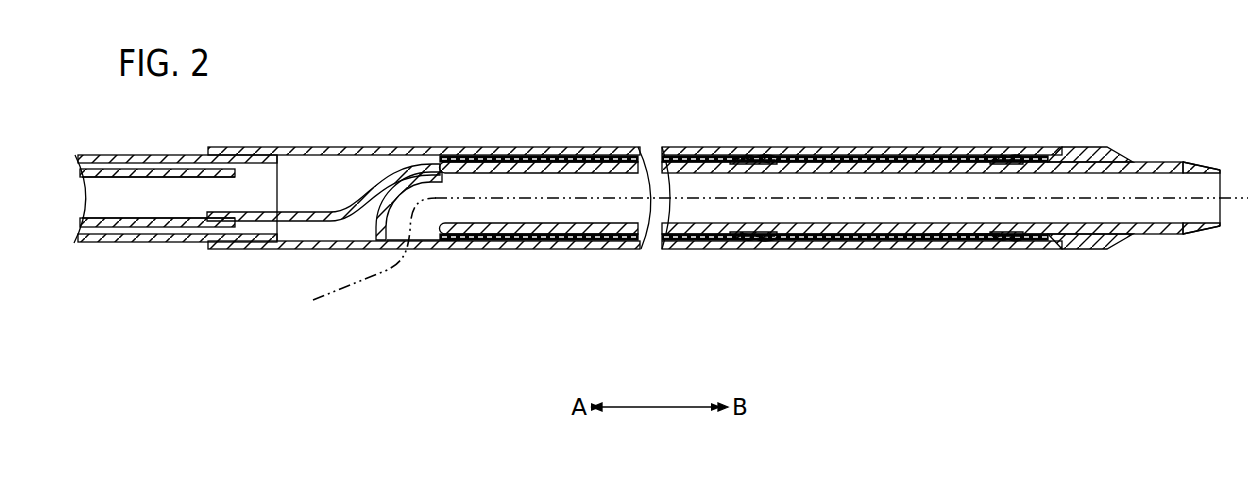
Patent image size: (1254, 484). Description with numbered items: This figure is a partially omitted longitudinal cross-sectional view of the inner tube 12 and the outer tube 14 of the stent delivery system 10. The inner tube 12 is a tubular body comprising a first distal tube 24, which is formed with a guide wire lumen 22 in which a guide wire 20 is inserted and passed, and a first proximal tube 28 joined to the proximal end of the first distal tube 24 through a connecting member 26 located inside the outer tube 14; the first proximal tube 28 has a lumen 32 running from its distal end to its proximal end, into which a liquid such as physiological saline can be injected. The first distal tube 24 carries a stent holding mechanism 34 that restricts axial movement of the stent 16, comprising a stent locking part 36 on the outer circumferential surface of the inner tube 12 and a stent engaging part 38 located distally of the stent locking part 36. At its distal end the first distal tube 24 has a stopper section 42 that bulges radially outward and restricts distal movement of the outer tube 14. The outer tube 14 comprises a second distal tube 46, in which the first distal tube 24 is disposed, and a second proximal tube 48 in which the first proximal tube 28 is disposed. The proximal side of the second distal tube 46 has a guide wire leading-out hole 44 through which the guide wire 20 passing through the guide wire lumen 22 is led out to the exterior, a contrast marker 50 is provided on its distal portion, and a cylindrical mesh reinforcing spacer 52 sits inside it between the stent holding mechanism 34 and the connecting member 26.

The stent delivery system 10 is at (926, 86).
The inner tube 12 is at (1195, 228).
The outer tube 14 is at (550, 252).
The stent 16 is at (868, 148).
The guide wire 20 is at (355, 289).
The guide wire lumen 22 is at (806, 190).
The first distal tube 24 is at (1207, 166).
The connecting member 26 is at (350, 212).
The first proximal tube 28 is at (147, 175).
The lumen 32 is at (103, 188).
The stent holding mechanism 34 is at (735, 158).
The stent locking part 36 is at (729, 242).
The stent engaging part 38 is at (787, 242).
The stopper section 42 is at (1095, 148).
The guide wire leading-out hole 44 is at (420, 250).
The second distal tube 46 is at (945, 241).
The second proximal tube 48 is at (142, 243).
The contrast marker 50 is at (1022, 153).
The reinforcing spacer 52 is at (512, 157).